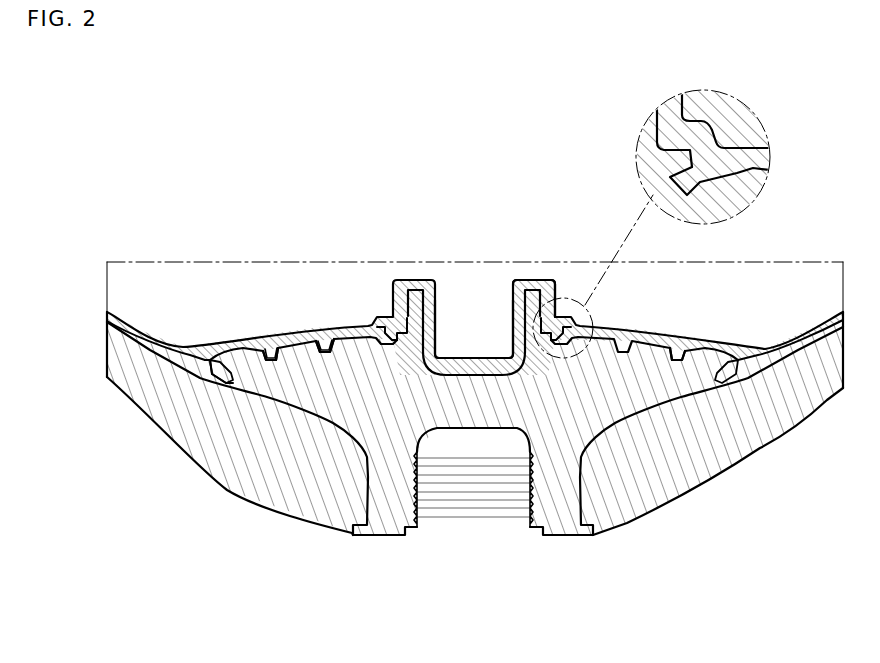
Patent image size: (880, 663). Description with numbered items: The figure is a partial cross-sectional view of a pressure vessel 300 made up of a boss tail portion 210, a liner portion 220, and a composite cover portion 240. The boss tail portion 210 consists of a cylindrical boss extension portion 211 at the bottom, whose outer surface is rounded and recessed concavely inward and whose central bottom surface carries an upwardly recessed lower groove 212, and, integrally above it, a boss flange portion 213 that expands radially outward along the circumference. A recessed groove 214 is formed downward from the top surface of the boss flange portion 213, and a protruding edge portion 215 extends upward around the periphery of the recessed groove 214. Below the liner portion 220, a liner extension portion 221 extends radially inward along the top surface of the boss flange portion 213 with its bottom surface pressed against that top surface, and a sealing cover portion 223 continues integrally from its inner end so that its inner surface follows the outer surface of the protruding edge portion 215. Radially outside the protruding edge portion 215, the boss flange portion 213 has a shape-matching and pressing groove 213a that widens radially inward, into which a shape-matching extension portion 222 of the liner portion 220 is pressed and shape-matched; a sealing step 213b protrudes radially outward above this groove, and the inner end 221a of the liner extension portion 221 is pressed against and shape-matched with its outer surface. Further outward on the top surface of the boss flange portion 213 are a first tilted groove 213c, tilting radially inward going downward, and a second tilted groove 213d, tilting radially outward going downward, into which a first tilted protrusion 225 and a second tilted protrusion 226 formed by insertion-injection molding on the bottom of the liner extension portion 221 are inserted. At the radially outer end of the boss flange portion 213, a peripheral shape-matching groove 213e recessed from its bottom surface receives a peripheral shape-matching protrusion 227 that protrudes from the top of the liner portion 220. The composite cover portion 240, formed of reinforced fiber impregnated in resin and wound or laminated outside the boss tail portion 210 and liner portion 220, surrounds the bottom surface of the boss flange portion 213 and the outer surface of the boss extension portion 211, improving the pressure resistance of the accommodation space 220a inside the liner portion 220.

The pressure vessel 300 is at (226, 140).
The boss tail portion 210 is at (473, 529).
The boss extension portion 211 is at (560, 505).
The lower groove 212 is at (450, 430).
The boss flange portion 213 is at (670, 380).
The shape-matching and pressing groove 213a is at (655, 180).
The sealing step 213b is at (666, 152).
The first tilted groove 213c is at (328, 352).
The second tilted groove 213d is at (270, 362).
The peripheral shape-matching groove 213e is at (228, 366).
The recessed groove 214 is at (470, 356).
The protruding edge portion 215 is at (508, 286).
The liner portion 220 is at (369, 321).
The accommodation space 220a is at (148, 303).
The liner extension portion 221 is at (668, 334).
The inner end of the liner extension portion 221a is at (722, 130).
The shape-matching extension portion 222 is at (688, 170).
The sealing cover portion 223 is at (533, 278).
The first tilted protrusion 225 is at (324, 338).
The second tilted protrusion 226 is at (272, 346).
The peripheral shape-matching protrusion 227 is at (226, 386).
The composite cover portion 240 is at (661, 505).